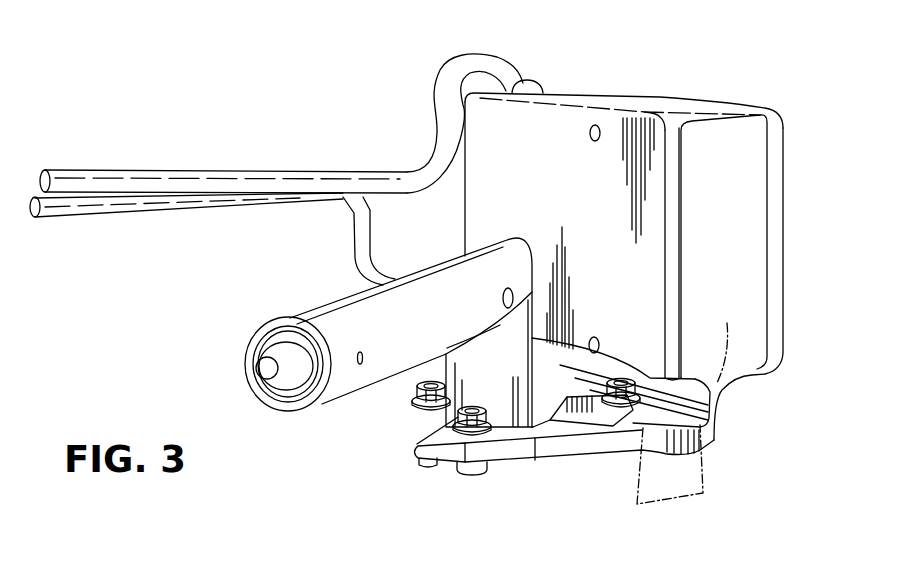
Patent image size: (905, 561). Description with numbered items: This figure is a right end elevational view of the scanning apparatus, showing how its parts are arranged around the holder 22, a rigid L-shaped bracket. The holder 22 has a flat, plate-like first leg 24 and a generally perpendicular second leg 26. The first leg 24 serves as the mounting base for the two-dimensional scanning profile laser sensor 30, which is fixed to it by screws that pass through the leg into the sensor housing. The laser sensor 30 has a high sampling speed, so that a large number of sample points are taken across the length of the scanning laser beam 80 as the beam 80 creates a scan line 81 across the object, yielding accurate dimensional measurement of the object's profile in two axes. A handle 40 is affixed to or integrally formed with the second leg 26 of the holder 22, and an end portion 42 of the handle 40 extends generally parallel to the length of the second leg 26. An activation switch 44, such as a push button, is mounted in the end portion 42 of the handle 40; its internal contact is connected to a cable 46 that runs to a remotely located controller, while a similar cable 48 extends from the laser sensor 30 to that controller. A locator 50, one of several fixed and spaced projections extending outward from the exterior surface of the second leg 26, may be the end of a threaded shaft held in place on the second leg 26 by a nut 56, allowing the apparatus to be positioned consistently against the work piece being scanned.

The holder 22 is at (643, 254).
The first leg 24 is at (785, 137).
The second leg 26 is at (538, 430).
The 2D scanning profile laser sensor 30 is at (663, 90).
The handle 40 is at (403, 262).
The end portion 42 is at (350, 393).
The activation switch 44 is at (263, 372).
The cable 46 is at (70, 205).
The cable 48 is at (117, 176).
The locator 50 is at (473, 476).
The nut 56 is at (413, 400).
The scanning laser beam 80 is at (728, 342).
The scan line 81 is at (688, 497).